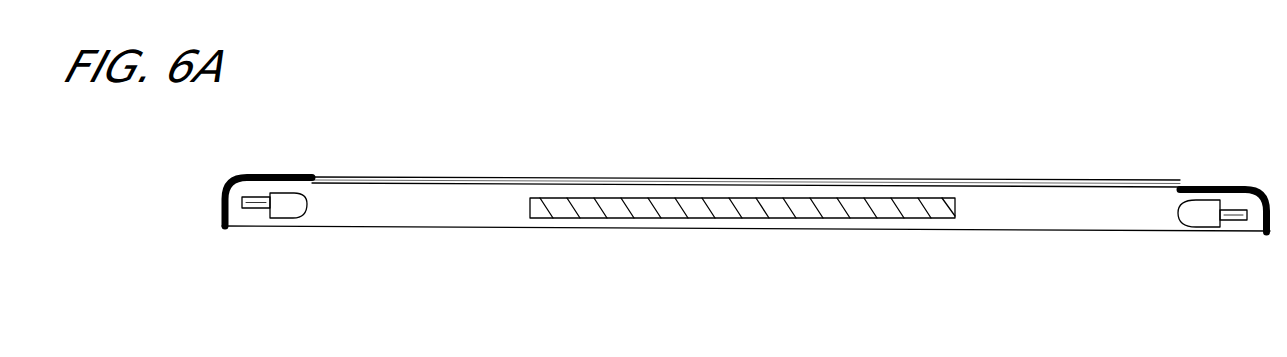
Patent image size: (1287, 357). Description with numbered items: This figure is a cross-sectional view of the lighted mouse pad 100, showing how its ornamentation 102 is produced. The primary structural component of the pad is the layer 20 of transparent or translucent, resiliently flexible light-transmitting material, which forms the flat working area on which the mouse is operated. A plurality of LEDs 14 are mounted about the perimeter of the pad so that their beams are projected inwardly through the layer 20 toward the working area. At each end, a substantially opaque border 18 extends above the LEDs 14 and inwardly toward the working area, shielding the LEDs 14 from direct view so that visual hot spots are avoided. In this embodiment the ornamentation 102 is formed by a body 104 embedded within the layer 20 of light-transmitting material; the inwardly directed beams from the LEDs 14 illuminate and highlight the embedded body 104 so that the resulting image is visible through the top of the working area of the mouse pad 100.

The mouse pad 100 is at (749, 183).
The ornamentation 102 is at (812, 186).
The body 104 is at (957, 205).
The layer 20 is at (458, 215).
The opaque border 18 is at (1203, 188).
The LEDs 14 is at (285, 218).